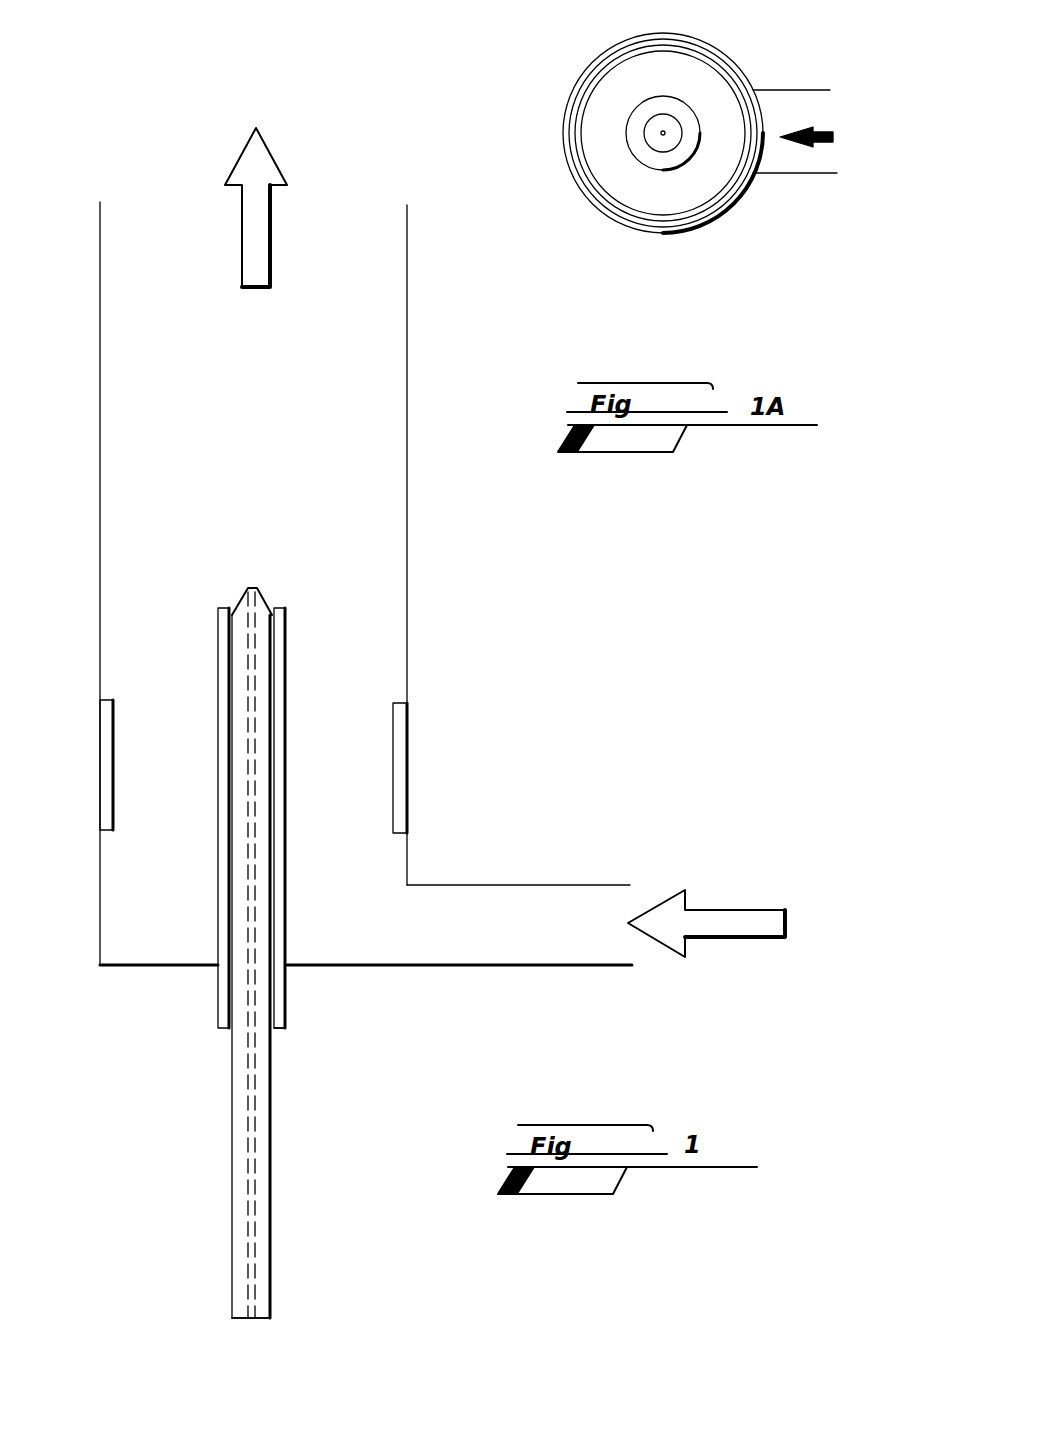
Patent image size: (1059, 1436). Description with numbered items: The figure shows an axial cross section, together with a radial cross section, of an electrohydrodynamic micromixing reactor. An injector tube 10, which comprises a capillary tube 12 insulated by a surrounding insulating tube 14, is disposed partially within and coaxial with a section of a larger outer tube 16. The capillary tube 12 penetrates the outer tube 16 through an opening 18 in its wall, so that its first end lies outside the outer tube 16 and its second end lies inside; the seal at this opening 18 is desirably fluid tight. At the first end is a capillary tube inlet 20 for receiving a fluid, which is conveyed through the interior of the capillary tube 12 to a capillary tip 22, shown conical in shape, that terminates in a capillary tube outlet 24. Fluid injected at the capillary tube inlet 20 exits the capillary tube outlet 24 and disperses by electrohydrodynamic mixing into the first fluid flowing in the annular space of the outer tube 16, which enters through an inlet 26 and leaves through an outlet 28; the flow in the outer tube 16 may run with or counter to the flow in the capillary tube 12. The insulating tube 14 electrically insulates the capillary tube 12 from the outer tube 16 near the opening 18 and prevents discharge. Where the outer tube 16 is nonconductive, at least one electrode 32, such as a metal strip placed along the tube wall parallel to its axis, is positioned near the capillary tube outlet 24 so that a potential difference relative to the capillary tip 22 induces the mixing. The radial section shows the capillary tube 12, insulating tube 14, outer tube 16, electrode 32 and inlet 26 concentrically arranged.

In FIG. 1, the injector tube 10 is at (626, 576).
In FIG. 1, the capillary tube 12 is at (232, 1110).
In FIG. 1A, the capillary tube 12 is at (650, 117).
In FIG. 1, the insulating tube 14 is at (285, 675).
In FIG. 1A, the insulating tube 14 is at (683, 100).
In FIG. 1, the outer tube 16 is at (98, 347).
In FIG. 1A, the outer tube 16 is at (593, 200).
In FIG. 1, the opening 18 is at (285, 1015).
In FIG. 1, the capillary tube inlet 20 is at (250, 1320).
In FIG. 1, the capillary tip 22 is at (272, 587).
In FIG. 1, the capillary tube outlet 24 is at (255, 578).
In FIG. 1, the inlet 26 is at (730, 910).
In FIG. 1A, the inlet 26 is at (820, 123).
In FIG. 1, the outlet 28 is at (242, 262).
In FIG. 1, the electrode 32 is at (100, 760).
In FIG. 1A, the electrode 32 is at (713, 217).